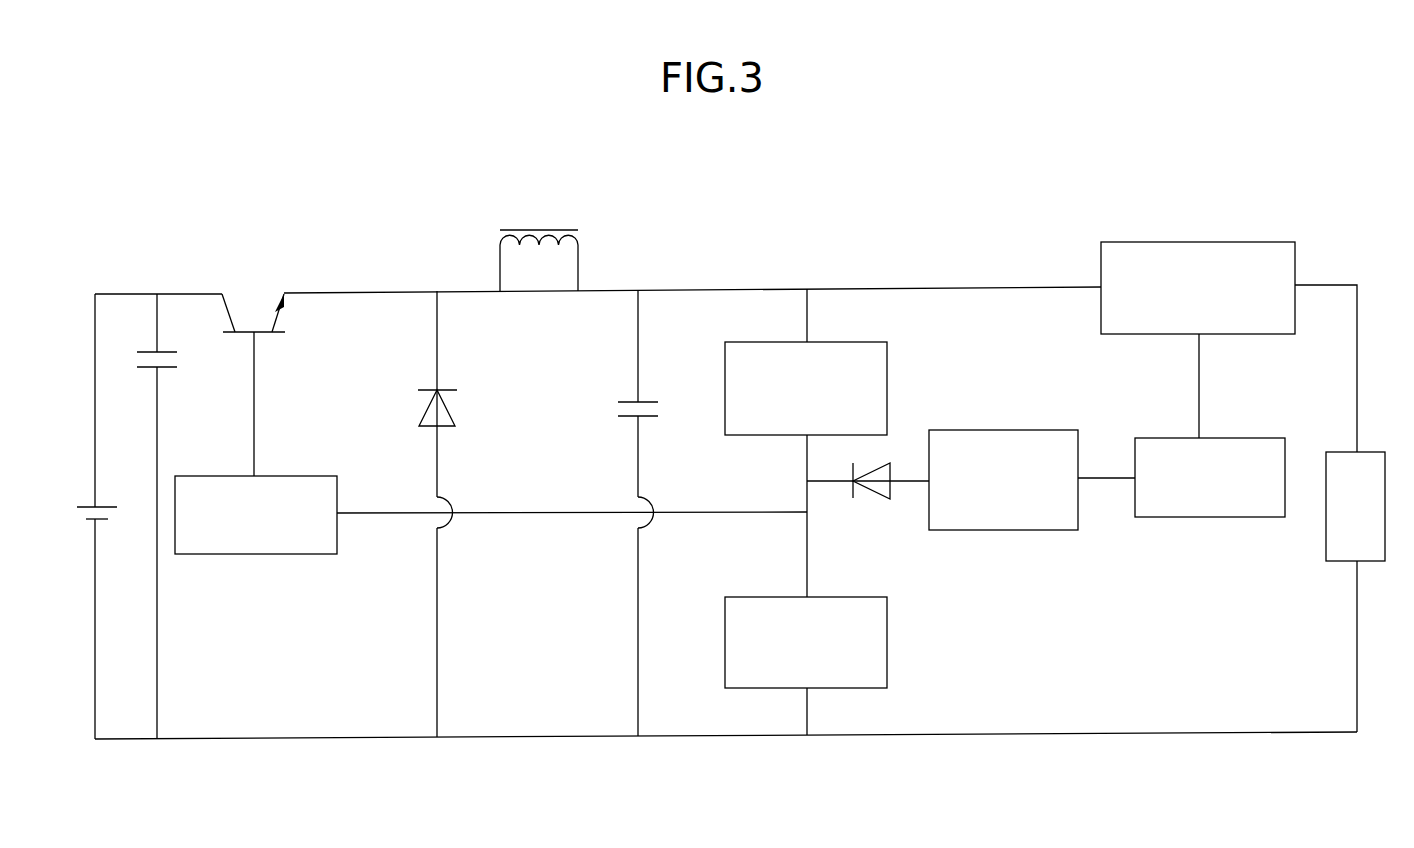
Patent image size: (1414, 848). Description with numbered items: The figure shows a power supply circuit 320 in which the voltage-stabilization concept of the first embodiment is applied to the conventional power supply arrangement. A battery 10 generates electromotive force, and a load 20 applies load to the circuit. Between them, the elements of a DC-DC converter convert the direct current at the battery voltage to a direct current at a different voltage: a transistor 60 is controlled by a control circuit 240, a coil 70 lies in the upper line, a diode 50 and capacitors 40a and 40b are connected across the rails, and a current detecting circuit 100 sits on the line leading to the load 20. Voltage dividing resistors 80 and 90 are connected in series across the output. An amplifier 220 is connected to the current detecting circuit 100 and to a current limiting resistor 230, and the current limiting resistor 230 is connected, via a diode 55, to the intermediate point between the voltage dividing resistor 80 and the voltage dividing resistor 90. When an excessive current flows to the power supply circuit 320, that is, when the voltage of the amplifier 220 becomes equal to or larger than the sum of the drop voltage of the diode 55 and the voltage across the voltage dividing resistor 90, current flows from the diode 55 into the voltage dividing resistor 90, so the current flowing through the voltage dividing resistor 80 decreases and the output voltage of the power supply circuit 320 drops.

The battery 10 is at (100, 506).
The load 20 is at (1367, 452).
The capacitor 40a is at (152, 351).
The capacitor 40b is at (630, 400).
The diode 50 is at (450, 412).
The diode 55 is at (885, 465).
The transistor 60 is at (286, 321).
The coil 70 is at (580, 254).
The voltage dividing resistor 80 is at (832, 341).
The voltage dividing resistor 90 is at (836, 596).
The current detecting circuit 100 is at (1242, 242).
The amplifier 220 is at (1245, 438).
The current limiting resistor 230 is at (1040, 430).
The control circuit 240 is at (288, 475).
The power supply circuit 320 is at (1038, 242).